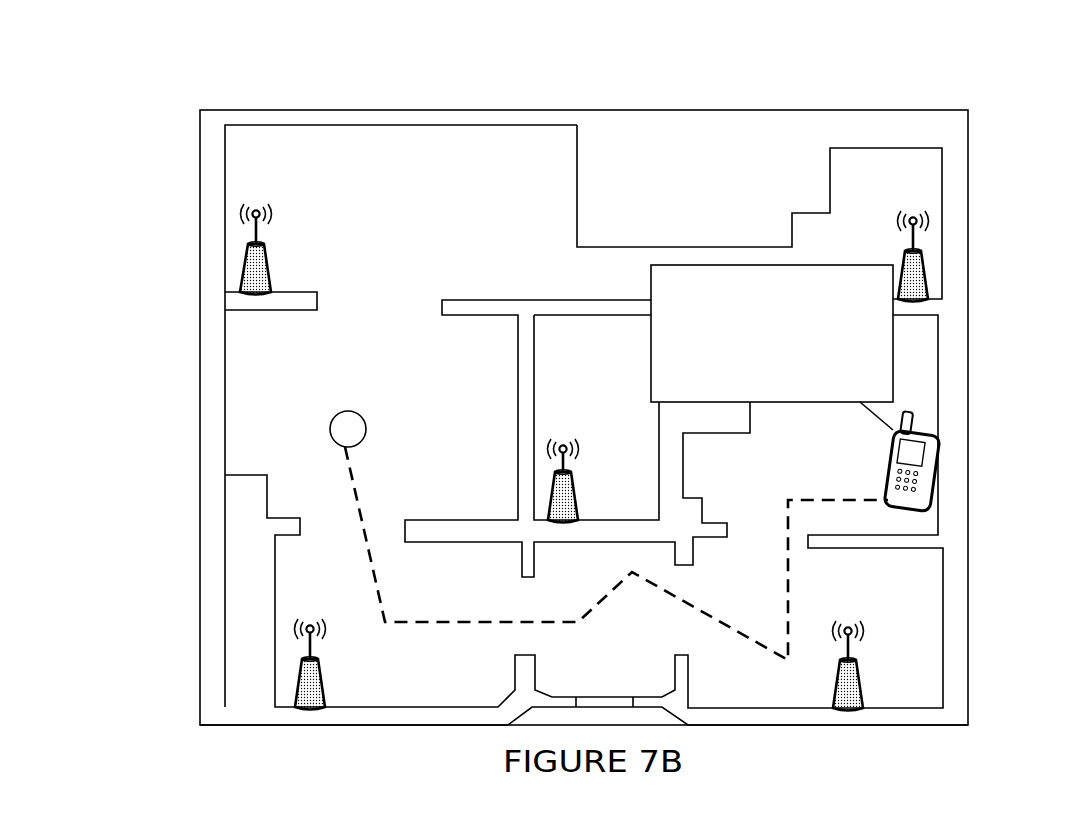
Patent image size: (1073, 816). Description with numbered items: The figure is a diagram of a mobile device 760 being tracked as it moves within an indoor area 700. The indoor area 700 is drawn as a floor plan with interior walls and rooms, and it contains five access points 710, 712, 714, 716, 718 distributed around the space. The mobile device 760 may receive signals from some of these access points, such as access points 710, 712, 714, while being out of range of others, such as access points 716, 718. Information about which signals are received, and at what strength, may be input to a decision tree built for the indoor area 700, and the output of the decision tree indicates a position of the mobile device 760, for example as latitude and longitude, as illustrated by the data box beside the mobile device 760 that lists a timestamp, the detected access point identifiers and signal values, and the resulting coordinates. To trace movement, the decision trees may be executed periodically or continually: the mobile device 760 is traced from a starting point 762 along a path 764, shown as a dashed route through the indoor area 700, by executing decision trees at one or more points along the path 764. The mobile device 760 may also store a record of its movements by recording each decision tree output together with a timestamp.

The indoor area 700 is at (203, 107).
The access point 710 is at (243, 277).
The access point 712 is at (316, 705).
The access point 714 is at (578, 502).
The access point 716 is at (925, 273).
The access point 718 is at (852, 702).
The mobile device 760 is at (925, 433).
The starting point 762 is at (330, 418).
The path 764 is at (443, 625).